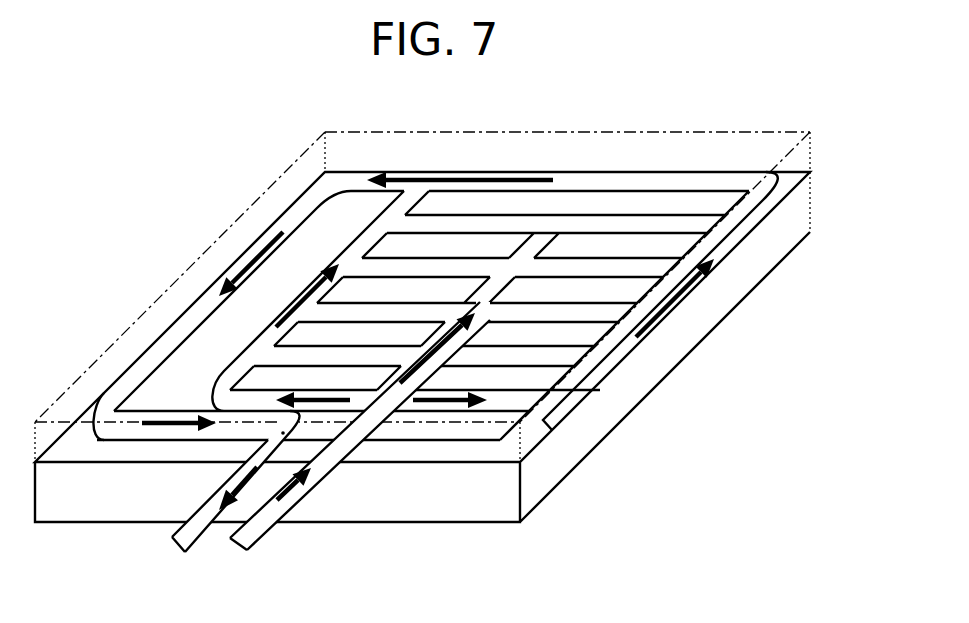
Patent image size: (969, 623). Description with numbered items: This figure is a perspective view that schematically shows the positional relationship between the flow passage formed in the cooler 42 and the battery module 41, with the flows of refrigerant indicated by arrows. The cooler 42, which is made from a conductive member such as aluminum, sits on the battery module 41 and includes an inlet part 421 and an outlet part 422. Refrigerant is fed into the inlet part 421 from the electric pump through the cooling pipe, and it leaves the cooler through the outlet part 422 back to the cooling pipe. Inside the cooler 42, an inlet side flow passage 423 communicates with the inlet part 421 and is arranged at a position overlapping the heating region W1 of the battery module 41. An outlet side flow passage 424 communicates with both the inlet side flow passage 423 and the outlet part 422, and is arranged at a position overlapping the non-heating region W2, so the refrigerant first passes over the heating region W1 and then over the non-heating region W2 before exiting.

The battery module 41 is at (540, 488).
The cooler 42 is at (200, 262).
The inlet part 421 is at (257, 528).
The outlet part 422 is at (198, 533).
The inlet side flow passage 423 is at (524, 252).
The outlet side flow passage 424 is at (825, 400).
The heating region W1 is at (437, 432).
The non-heating region W2 is at (537, 428).